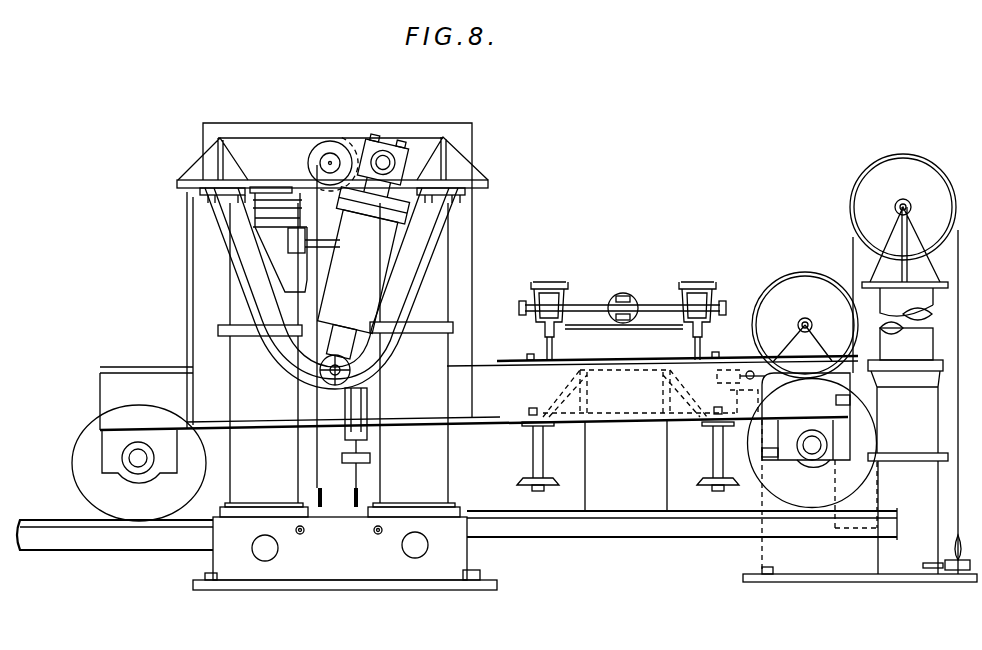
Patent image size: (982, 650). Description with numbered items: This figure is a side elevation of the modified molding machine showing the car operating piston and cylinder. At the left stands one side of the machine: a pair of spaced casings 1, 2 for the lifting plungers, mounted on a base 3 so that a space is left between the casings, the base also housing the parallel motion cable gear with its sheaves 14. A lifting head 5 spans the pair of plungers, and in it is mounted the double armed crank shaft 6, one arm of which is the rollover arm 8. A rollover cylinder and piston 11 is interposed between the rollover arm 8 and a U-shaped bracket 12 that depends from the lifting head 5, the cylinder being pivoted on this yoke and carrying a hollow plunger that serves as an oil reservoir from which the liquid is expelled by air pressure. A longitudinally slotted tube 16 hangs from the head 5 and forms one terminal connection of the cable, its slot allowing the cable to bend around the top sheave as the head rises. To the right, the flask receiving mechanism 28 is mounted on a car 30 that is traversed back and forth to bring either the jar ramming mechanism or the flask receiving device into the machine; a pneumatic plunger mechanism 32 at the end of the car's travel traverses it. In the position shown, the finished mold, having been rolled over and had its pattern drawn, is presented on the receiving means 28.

The casing 1 is at (263, 360).
The casing 2 is at (414, 360).
The base 3 is at (345, 553).
The lifting head 5 is at (277, 147).
The double armed crank shaft 6 is at (320, 152).
The rollover arm 8 is at (360, 147).
The rollover cylinder and piston 11 is at (357, 286).
The U-shaped bracket 12 is at (331, 288).
The sheaves 14 is at (353, 503).
The longitudinally slotted tube 16 is at (347, 441).
The flask receiving mechanism 28 is at (666, 302).
The car 30 is at (148, 372).
The pneumatic plunger mechanism 32 is at (904, 364).